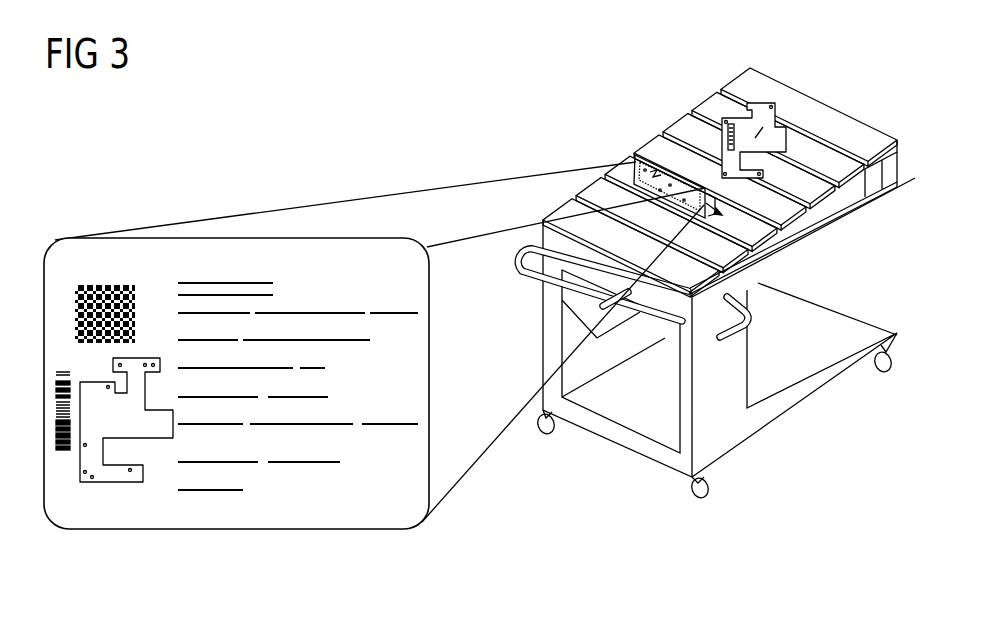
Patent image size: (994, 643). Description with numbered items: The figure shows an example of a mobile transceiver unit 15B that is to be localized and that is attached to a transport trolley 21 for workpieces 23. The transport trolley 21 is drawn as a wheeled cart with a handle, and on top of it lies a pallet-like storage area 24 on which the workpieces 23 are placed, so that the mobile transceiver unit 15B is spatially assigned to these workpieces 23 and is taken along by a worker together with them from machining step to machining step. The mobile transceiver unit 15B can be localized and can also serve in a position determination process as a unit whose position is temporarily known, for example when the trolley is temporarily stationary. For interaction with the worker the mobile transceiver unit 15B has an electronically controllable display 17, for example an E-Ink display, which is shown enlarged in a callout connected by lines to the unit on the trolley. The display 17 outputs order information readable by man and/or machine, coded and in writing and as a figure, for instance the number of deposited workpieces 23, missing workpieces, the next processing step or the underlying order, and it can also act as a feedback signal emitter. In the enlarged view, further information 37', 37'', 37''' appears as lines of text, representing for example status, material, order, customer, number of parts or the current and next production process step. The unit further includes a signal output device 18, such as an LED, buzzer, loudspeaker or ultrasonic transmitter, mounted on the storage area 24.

The mobile transceiver unit 15B is at (792, 232).
The display 17 is at (110, 515).
The signal output device 18 is at (707, 200).
The transport trolley 21 is at (830, 277).
The workpieces 23 is at (777, 110).
The storage area 24 is at (839, 133).
The further information 37' is at (298, 282).
The further information 37'' is at (298, 394).
The further information 37''' is at (270, 495).